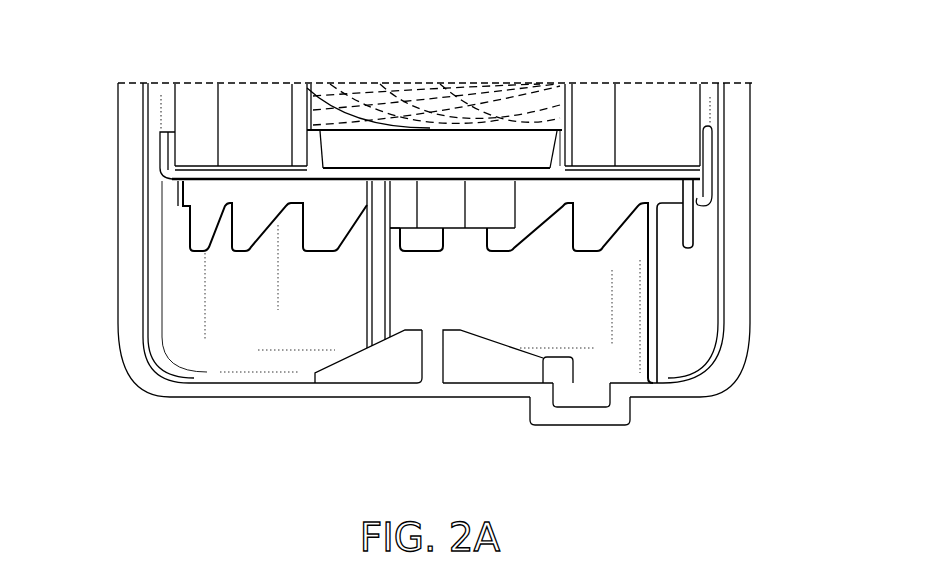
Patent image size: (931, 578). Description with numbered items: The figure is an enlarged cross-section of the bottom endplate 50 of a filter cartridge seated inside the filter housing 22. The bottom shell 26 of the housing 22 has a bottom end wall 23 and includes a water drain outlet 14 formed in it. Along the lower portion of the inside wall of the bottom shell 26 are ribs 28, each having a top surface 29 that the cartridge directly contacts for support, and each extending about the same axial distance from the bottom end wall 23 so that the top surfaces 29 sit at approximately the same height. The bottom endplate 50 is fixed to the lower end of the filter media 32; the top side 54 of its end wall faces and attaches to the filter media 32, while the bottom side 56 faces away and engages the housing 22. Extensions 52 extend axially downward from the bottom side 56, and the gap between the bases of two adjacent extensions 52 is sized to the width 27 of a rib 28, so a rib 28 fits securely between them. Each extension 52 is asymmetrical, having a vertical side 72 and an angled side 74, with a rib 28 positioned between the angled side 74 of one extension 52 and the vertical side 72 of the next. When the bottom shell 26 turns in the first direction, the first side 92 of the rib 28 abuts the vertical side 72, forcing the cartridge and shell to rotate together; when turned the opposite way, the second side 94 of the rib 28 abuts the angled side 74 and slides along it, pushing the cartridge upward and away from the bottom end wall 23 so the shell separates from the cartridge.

The water drain outlet 14 is at (591, 421).
The filter housing 22 is at (120, 203).
The bottom end wall 23 is at (353, 398).
The bottom shell 26 is at (125, 332).
The width of the ribs 27 is at (343, 326).
The rib 28 is at (427, 322).
The top surface 29 is at (700, 200).
The filter media 32 is at (192, 114).
The bottom endplate 50 is at (715, 141).
The extension 52 is at (183, 240).
The top side 54 is at (658, 167).
The bottom side 56 is at (643, 180).
The vertical side 72 is at (390, 252).
The angled side 74 is at (337, 245).
The first side 92 is at (393, 284).
The second side 94 is at (367, 278).